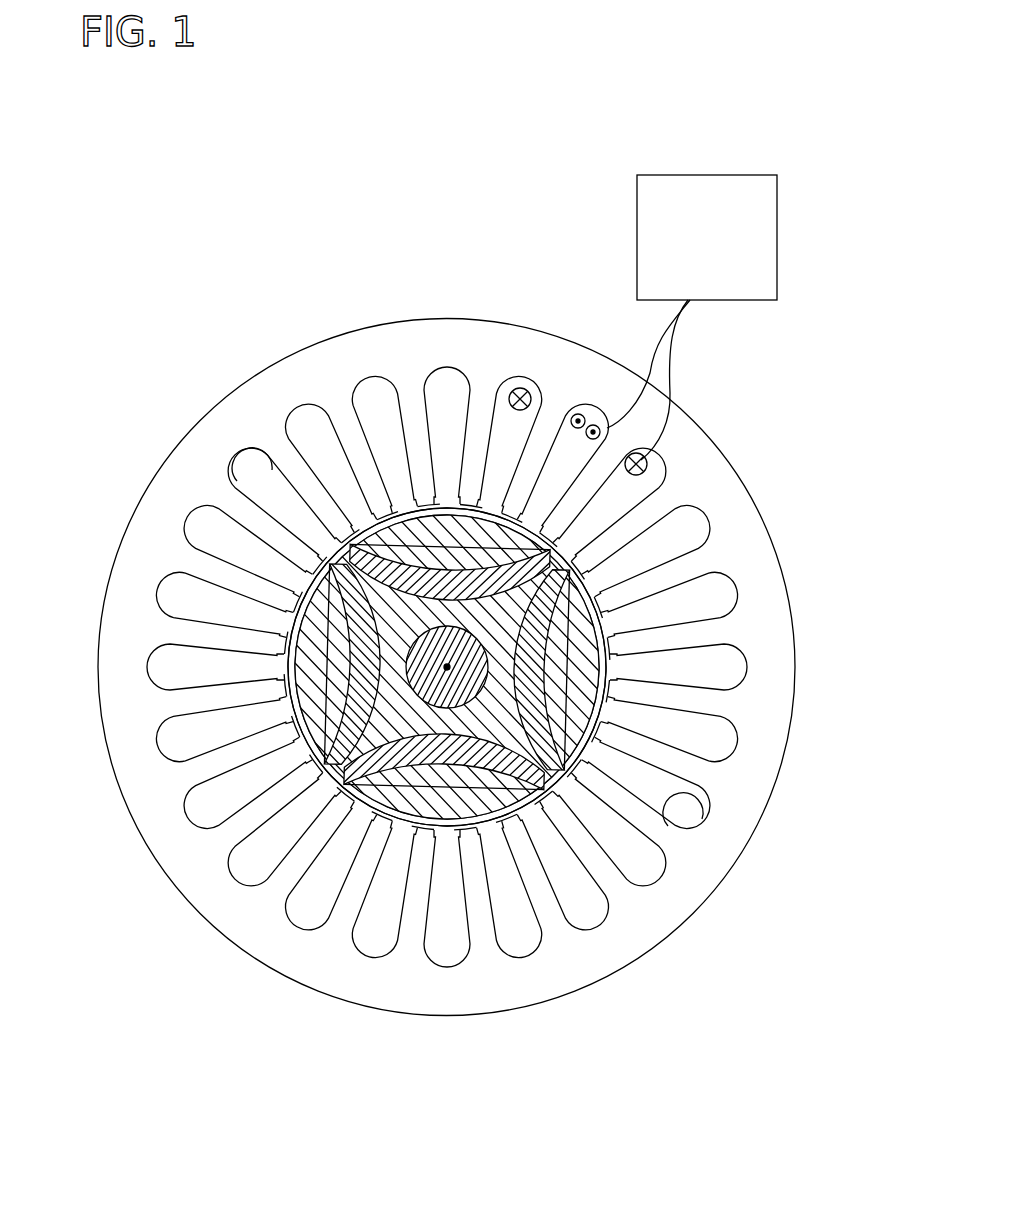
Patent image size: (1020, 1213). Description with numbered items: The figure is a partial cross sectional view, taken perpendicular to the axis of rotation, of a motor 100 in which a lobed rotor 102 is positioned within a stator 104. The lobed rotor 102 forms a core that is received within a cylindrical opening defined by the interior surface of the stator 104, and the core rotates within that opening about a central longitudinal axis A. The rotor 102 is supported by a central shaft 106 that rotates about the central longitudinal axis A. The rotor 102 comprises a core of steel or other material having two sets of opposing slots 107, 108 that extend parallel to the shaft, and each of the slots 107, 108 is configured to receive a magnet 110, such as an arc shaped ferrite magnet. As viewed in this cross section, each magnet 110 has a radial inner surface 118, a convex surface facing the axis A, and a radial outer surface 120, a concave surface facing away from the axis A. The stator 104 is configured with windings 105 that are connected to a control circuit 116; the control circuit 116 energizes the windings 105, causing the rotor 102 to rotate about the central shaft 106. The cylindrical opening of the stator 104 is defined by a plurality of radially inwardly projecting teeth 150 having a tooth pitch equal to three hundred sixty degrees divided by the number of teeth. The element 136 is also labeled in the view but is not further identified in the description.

The motor 100 is at (150, 283).
The lobed rotor 102 is at (385, 822).
The stator 104 is at (585, 612).
The windings 105 is at (588, 428).
The central shaft 106 is at (600, 690).
The slots 107 is at (423, 567).
The slots 108 is at (595, 805).
The magnet 110 is at (447, 573).
The control circuit 116 is at (703, 176).
The radial inner surface 118 is at (537, 570).
The radial outer surface 120 is at (615, 662).
The shaft 136 is at (447, 668).
The teeth 150 is at (233, 460).
The central longitudinal axis A is at (360, 652).